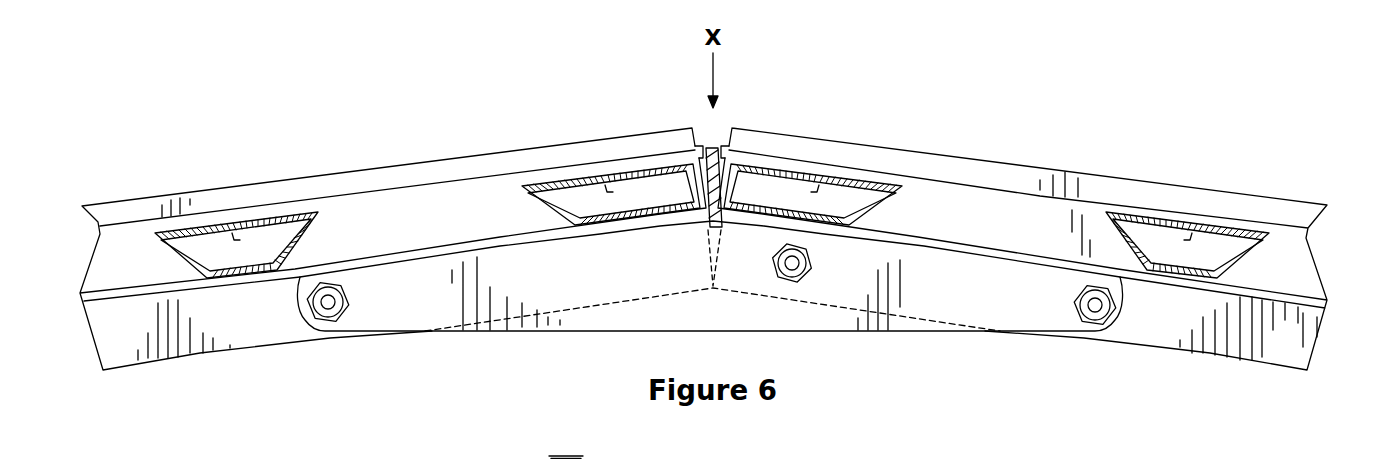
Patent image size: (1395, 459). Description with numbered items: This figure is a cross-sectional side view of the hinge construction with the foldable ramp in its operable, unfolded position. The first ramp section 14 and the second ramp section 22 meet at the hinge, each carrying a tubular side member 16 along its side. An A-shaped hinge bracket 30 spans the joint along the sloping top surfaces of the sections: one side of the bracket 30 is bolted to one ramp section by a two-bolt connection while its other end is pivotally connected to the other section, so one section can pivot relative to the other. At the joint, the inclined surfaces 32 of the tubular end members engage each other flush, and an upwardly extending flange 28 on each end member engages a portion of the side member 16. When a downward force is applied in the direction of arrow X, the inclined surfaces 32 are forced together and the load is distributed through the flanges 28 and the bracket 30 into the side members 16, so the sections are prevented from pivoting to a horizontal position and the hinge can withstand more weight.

The first ramp section 14 is at (203, 360).
The second ramp section 22 is at (1189, 357).
The side member 16 is at (107, 323).
The flange 28 is at (685, 137).
The hinge bracket 30 is at (782, 308).
The inclined surface 32 is at (715, 157).